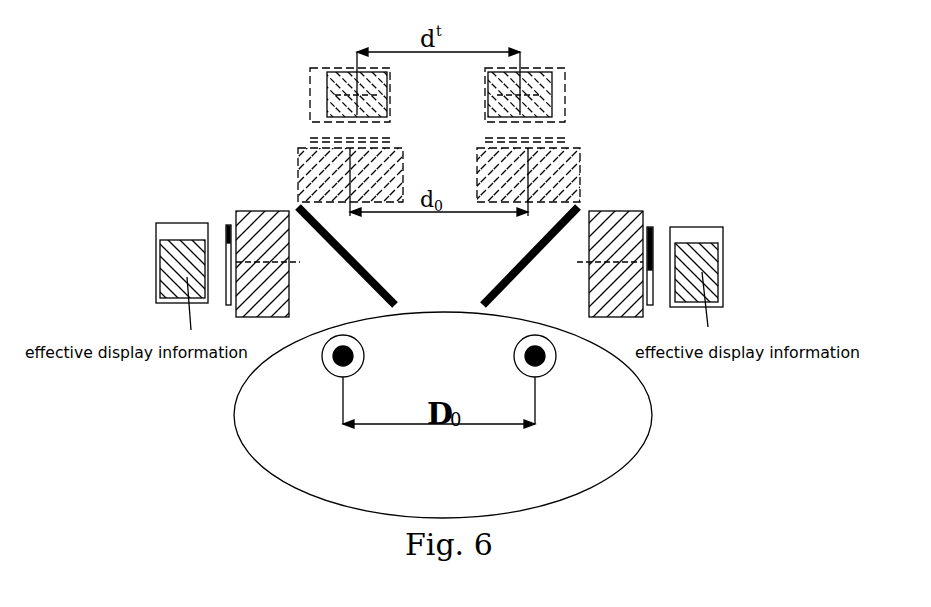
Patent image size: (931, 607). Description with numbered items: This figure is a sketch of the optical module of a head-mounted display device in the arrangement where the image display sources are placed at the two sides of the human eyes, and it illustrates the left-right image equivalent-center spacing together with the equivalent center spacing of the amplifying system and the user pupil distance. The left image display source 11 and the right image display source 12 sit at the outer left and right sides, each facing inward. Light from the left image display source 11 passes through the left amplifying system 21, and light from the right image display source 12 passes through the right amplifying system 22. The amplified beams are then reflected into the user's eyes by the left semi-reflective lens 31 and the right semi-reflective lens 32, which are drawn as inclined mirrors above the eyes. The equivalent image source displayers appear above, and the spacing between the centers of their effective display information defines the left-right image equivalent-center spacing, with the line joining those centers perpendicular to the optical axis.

The left image display source 11 is at (229, 225).
The right image display source 12 is at (651, 227).
The left amplifying system 21 is at (252, 246).
The right amplifying system 22 is at (607, 235).
The left semi-reflective lens 31 is at (388, 288).
The right semi-reflective lens 32 is at (505, 277).